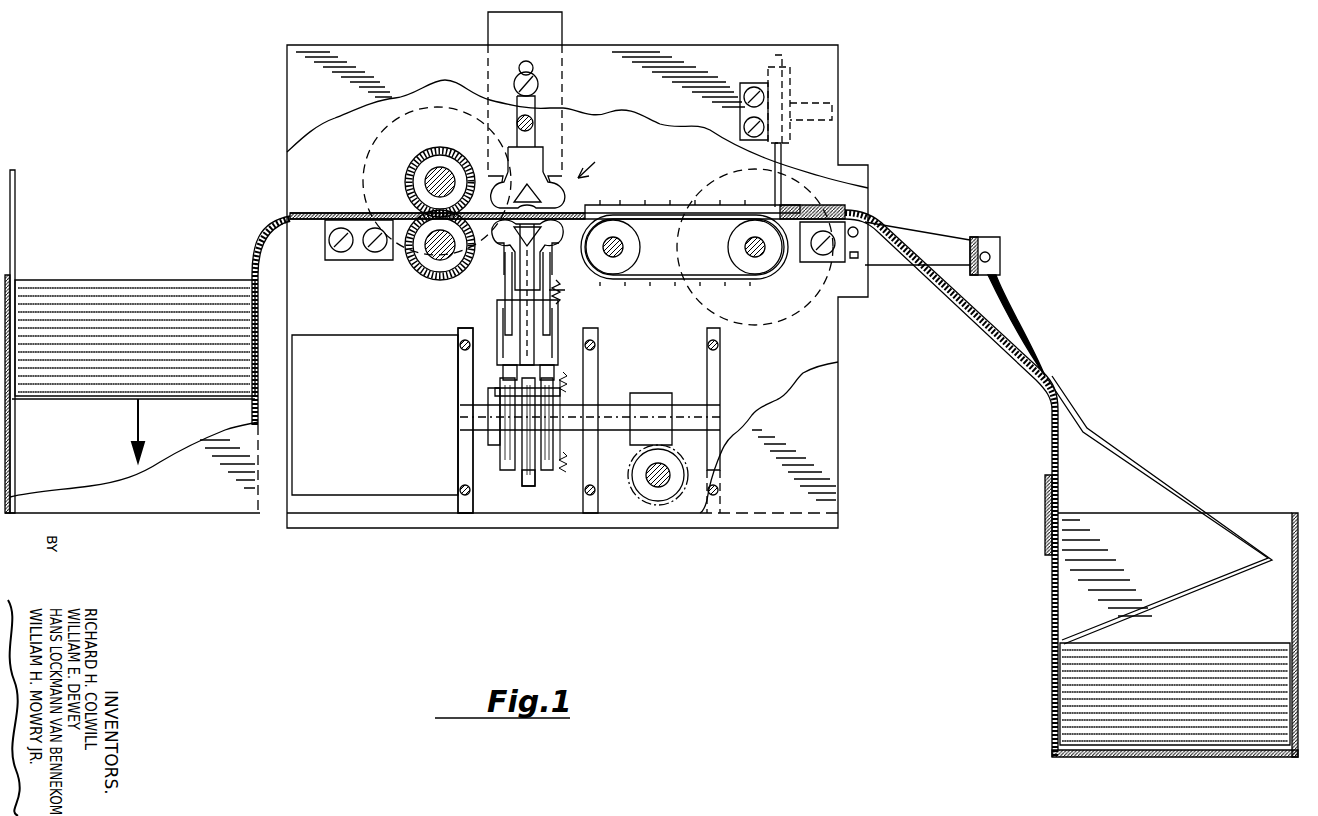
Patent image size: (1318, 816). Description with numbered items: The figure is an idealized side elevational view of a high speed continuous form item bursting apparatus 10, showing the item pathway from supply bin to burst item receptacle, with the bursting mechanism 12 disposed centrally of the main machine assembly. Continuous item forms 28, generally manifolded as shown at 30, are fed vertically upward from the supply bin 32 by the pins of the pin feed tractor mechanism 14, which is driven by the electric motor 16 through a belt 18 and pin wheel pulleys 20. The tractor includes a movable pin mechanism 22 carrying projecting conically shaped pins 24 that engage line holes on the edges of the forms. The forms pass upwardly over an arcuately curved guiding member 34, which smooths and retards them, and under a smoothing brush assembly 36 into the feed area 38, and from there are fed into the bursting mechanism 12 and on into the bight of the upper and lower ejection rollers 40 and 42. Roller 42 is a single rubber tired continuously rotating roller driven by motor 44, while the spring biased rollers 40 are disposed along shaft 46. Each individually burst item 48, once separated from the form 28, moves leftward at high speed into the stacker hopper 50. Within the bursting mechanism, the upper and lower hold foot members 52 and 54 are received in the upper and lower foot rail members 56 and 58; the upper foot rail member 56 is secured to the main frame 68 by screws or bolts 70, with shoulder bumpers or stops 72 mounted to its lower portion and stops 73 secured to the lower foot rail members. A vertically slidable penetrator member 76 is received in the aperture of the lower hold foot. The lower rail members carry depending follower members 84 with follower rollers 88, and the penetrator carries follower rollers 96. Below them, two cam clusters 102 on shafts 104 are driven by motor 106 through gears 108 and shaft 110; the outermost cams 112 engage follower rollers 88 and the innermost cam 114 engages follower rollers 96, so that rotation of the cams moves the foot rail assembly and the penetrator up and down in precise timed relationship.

The item bursting apparatus 10 is at (698, 26).
The bursting mechanism 12 is at (596, 158).
The pin feed tractor mechanism 14 is at (661, 282).
The electric motor 16 is at (800, 306).
The belt 18 is at (752, 278).
The pin wheel pulleys 20 is at (606, 274).
The movable pin mechanism 22 is at (630, 284).
The conically shaped pins 24 is at (792, 268).
The continuous item forms 28 is at (1164, 484).
The manifolded forms 30 is at (1228, 642).
The supply bin 32 is at (1052, 675).
The arcuately curved guiding member 34 is at (1000, 335).
The smoothing brush assembly 36 is at (1005, 292).
The feed area 38 is at (628, 203).
The upper ejection rollers 40 is at (440, 156).
The lower ejection roller 42 is at (432, 271).
The motor 44 is at (408, 118).
The shaft 46 is at (428, 178).
The burst item 48 is at (122, 283).
The stacker hopper 50 is at (230, 506).
The upper hold foot member 52 is at (552, 195).
The lower hold foot member 54 is at (564, 371).
The upper foot rail member 56 is at (562, 25).
The lower foot rail member 58 is at (506, 304).
The main frame 68 is at (294, 150).
The screws or bolts 70 is at (530, 120).
The shoulder bumpers or stops 72 is at (492, 180).
The stops 73 is at (504, 250).
The penetrator member 76 is at (522, 282).
The follower members 84 is at (625, 340).
The follower rollers 88 is at (556, 374).
The follower roller 96 is at (500, 385).
The cam clusters 102 is at (508, 490).
The shafts 104 is at (695, 415).
The motor 106 is at (340, 345).
The gears 108 is at (658, 400).
The shaft 110 is at (657, 488).
The outermost cams 112 is at (552, 460).
The innermost cam 114 is at (526, 485).